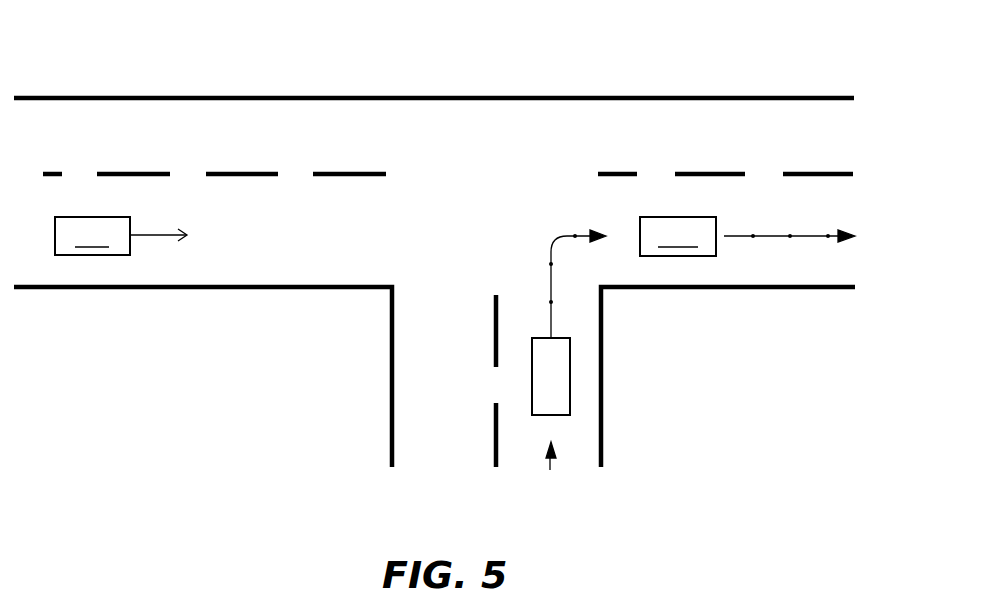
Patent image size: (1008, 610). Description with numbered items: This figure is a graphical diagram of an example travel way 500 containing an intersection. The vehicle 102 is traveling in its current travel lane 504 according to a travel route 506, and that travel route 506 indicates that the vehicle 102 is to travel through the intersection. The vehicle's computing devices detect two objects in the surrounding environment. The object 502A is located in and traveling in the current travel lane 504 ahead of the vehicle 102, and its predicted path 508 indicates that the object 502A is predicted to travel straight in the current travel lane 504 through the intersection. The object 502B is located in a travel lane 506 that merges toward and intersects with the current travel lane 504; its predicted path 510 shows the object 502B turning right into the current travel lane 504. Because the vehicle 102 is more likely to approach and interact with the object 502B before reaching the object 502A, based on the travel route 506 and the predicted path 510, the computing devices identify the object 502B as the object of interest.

The travel way 500 is at (204, 57).
The vehicle 102 is at (92, 236).
The object 502A is at (678, 236).
The object 502B is at (552, 386).
The current travel lane 504 is at (838, 206).
The travel route 506 is at (165, 232).
The predicted path 508 is at (838, 239).
The predicted path 510 is at (563, 234).